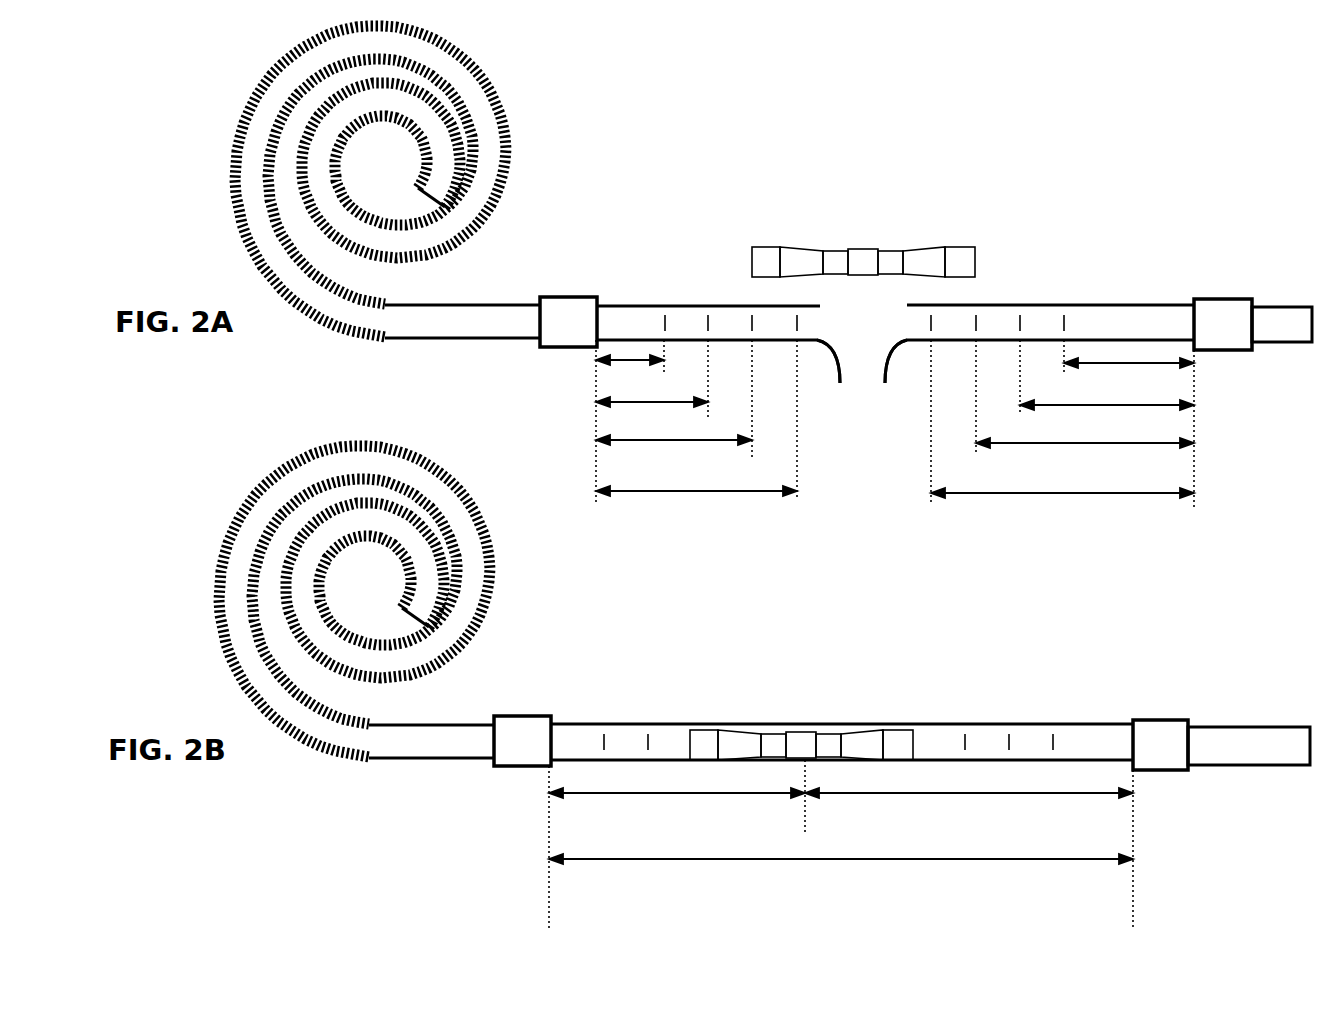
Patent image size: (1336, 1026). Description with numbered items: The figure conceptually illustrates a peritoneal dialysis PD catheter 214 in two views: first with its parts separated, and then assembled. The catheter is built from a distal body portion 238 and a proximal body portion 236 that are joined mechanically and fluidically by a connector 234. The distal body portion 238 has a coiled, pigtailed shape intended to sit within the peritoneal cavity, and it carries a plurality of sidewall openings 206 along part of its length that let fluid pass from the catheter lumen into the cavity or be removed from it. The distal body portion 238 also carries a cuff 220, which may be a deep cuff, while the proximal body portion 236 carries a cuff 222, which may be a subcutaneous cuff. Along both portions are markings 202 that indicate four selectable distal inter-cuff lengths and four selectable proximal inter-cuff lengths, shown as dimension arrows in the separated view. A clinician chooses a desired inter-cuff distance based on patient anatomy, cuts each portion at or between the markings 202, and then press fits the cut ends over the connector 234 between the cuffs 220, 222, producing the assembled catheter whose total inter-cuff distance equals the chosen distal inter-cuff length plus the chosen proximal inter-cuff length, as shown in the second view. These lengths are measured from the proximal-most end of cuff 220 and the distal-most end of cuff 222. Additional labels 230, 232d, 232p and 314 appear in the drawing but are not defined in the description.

In FIG. 2A, the markings 202 is at (667, 322).
In FIG. 2B, the markings 202 is at (650, 748).
In FIG. 2A, the sidewall openings 206 is at (473, 110).
In FIG. 2B, the sidewall openings 206 is at (460, 530).
In FIG. 2A, the PD catheter 214 is at (1174, 68).
In FIG. 2A, the cuff 220 is at (573, 297).
In FIG. 2B, the cuff 220 is at (523, 716).
In FIG. 2A, the cuff 222 is at (1220, 299).
In FIG. 2B, the cuff 222 is at (1160, 720).
In FIG. 2A, the distal tip 230 is at (433, 186).
In FIG. 2B, the distal tip 230 is at (416, 606).
In FIG. 2A, the distal shaft segment end 232d is at (836, 376).
In FIG. 2A, the proximal shaft segment end 232p is at (904, 376).
In FIG. 2A, the connector 234 is at (880, 268).
In FIG. 2B, the connector 234 is at (793, 745).
In FIG. 2A, the proximal body portion 236 is at (1285, 307).
In FIG. 2B, the proximal body portion 236 is at (1287, 727).
In FIG. 2A, the distal body portion 238 is at (237, 175).
In FIG. 2B, the distal body portion 238 is at (233, 540).
In FIG. 2B, the catheter assembly (second configuration) 314 is at (1154, 594).